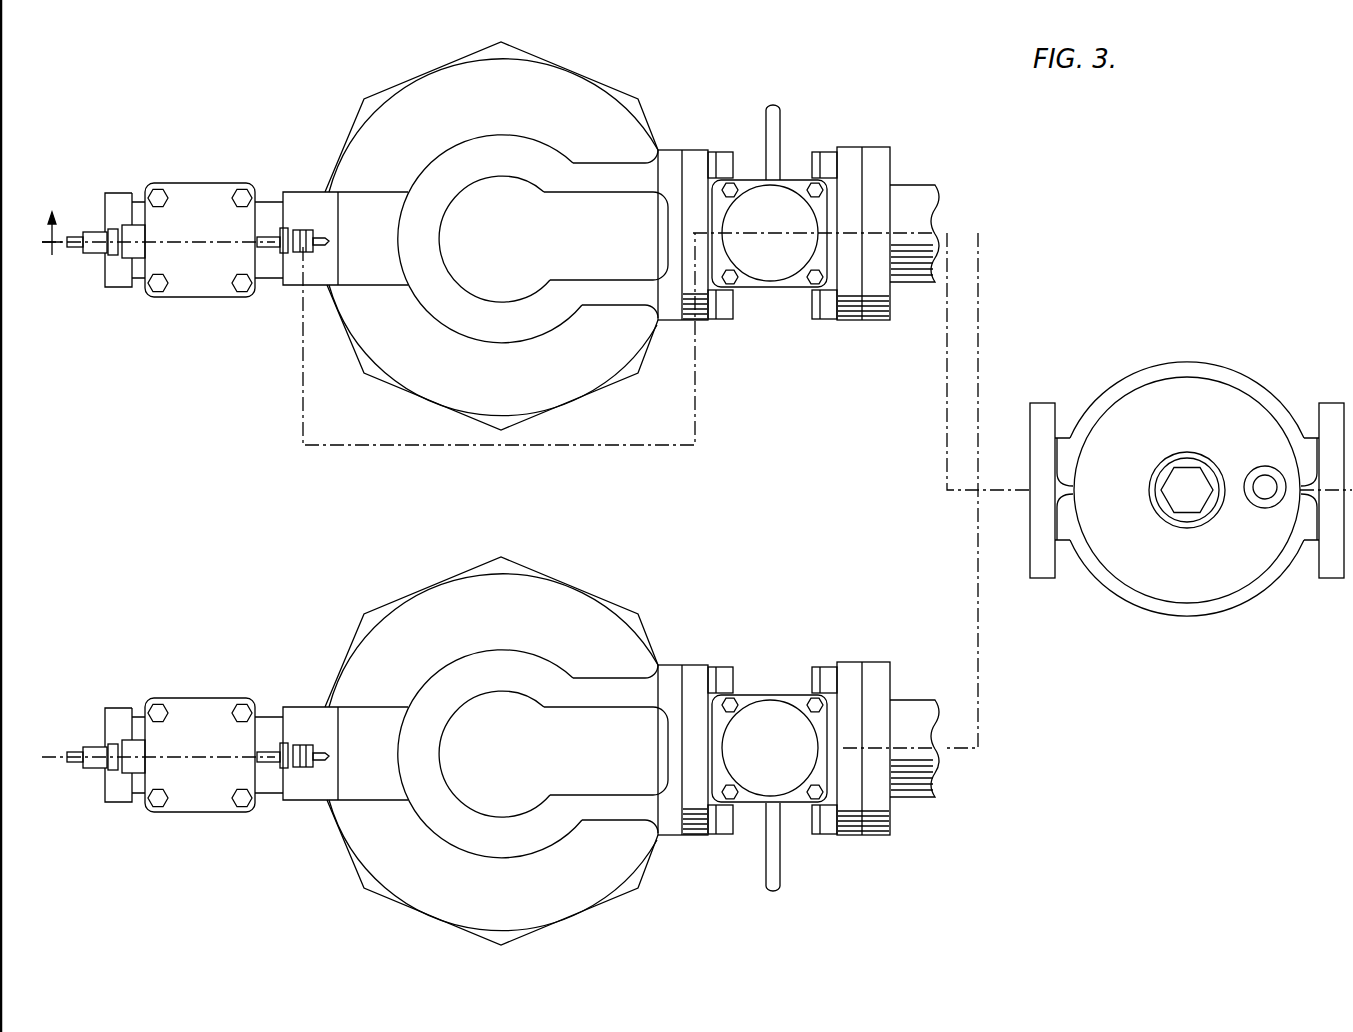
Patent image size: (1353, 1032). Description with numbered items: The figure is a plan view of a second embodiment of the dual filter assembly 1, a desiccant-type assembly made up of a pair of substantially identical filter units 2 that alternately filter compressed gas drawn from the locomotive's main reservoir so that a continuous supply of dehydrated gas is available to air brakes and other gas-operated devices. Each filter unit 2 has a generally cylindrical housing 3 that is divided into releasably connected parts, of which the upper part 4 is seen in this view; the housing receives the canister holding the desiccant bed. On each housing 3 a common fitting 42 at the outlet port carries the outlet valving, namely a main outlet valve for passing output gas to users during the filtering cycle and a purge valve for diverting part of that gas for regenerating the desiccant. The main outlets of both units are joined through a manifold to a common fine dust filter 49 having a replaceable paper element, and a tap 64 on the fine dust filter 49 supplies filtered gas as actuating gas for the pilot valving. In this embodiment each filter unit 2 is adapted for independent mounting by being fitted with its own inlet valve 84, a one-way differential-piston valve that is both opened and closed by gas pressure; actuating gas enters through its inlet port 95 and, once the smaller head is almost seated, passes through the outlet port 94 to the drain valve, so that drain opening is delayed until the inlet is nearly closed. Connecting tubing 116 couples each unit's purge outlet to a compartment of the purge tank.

The dual filter assembly 1 is at (583, 403).
The filter unit 2 is at (447, 412).
The housing 3 is at (436, 151).
The upper part 4 is at (59, 227).
The fitting 42 is at (747, 180).
The fine dust filter 49 is at (1242, 606).
The tap 64 is at (1267, 509).
The inlet valve 84 is at (225, 183).
The outlet port 94 is at (93, 254).
The inlet port 95 is at (307, 230).
The connecting tubing 116 is at (779, 122).